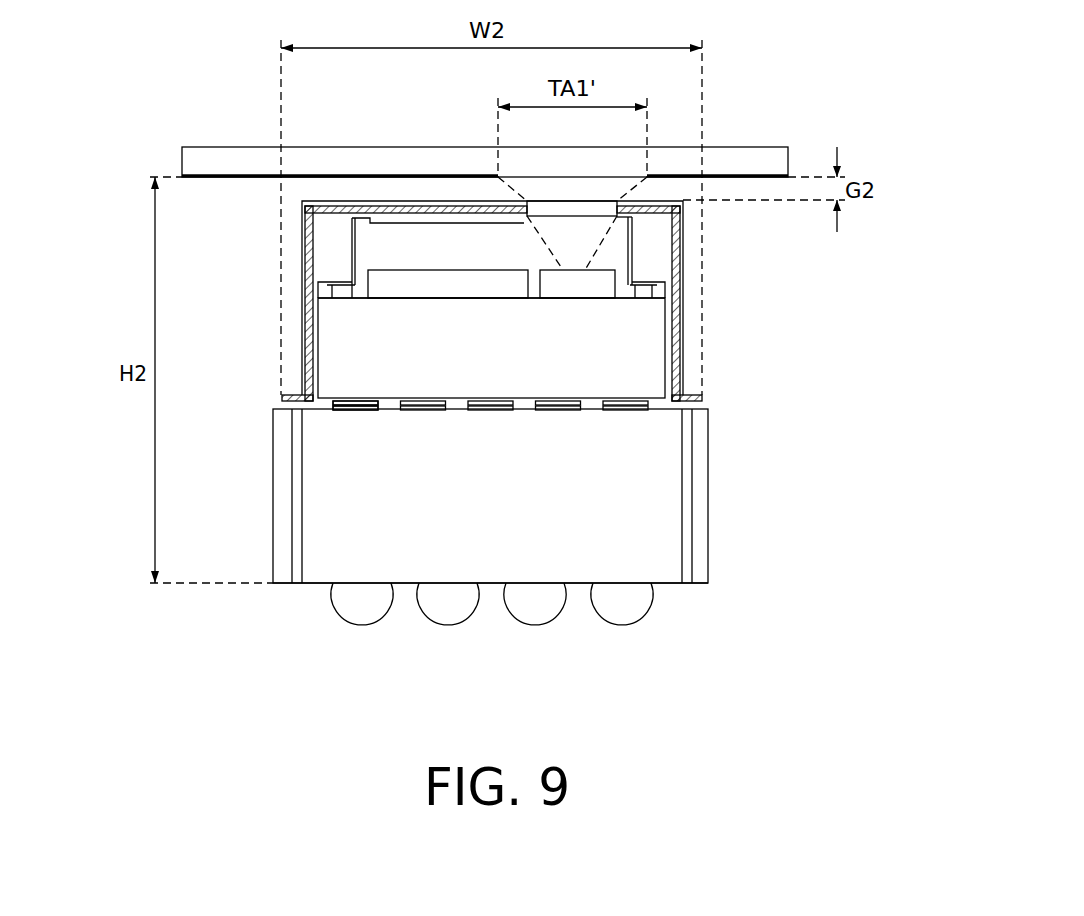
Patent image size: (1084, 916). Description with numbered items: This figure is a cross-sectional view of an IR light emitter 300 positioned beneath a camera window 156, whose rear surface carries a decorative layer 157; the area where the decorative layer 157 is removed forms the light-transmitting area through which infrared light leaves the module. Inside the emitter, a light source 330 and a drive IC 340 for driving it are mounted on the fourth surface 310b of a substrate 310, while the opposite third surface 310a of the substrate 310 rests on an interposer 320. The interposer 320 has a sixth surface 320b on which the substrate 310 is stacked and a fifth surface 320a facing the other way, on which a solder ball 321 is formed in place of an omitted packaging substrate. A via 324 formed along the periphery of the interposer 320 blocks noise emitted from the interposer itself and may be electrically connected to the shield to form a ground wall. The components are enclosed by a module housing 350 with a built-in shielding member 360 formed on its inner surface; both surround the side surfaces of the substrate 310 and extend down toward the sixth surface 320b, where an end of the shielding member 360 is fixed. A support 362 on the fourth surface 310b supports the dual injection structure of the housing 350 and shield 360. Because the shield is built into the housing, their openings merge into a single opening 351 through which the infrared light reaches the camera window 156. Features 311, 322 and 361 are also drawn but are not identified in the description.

The camera window 156 is at (750, 157).
The decorative layer 157 is at (222, 174).
The IR light emitter 300 is at (248, 344).
The substrate 310 is at (640, 348).
The third surface 310a is at (655, 399).
The fourth surface 310b is at (663, 313).
The bonding pad 311 is at (343, 408).
The interposer 320 is at (660, 532).
The fifth surface 320a is at (673, 583).
The sixth surface 320b is at (660, 410).
The solder ball 321 is at (537, 607).
The substrate wiring 322 is at (367, 410).
The via 324 is at (296, 493).
The light source 330 is at (582, 283).
The drive IC 340 is at (432, 282).
The module housing 350 is at (302, 240).
The opening 351 is at (563, 208).
The shielding member 360 is at (312, 282).
The shield flange 361 is at (294, 396).
The support 362 is at (632, 247).